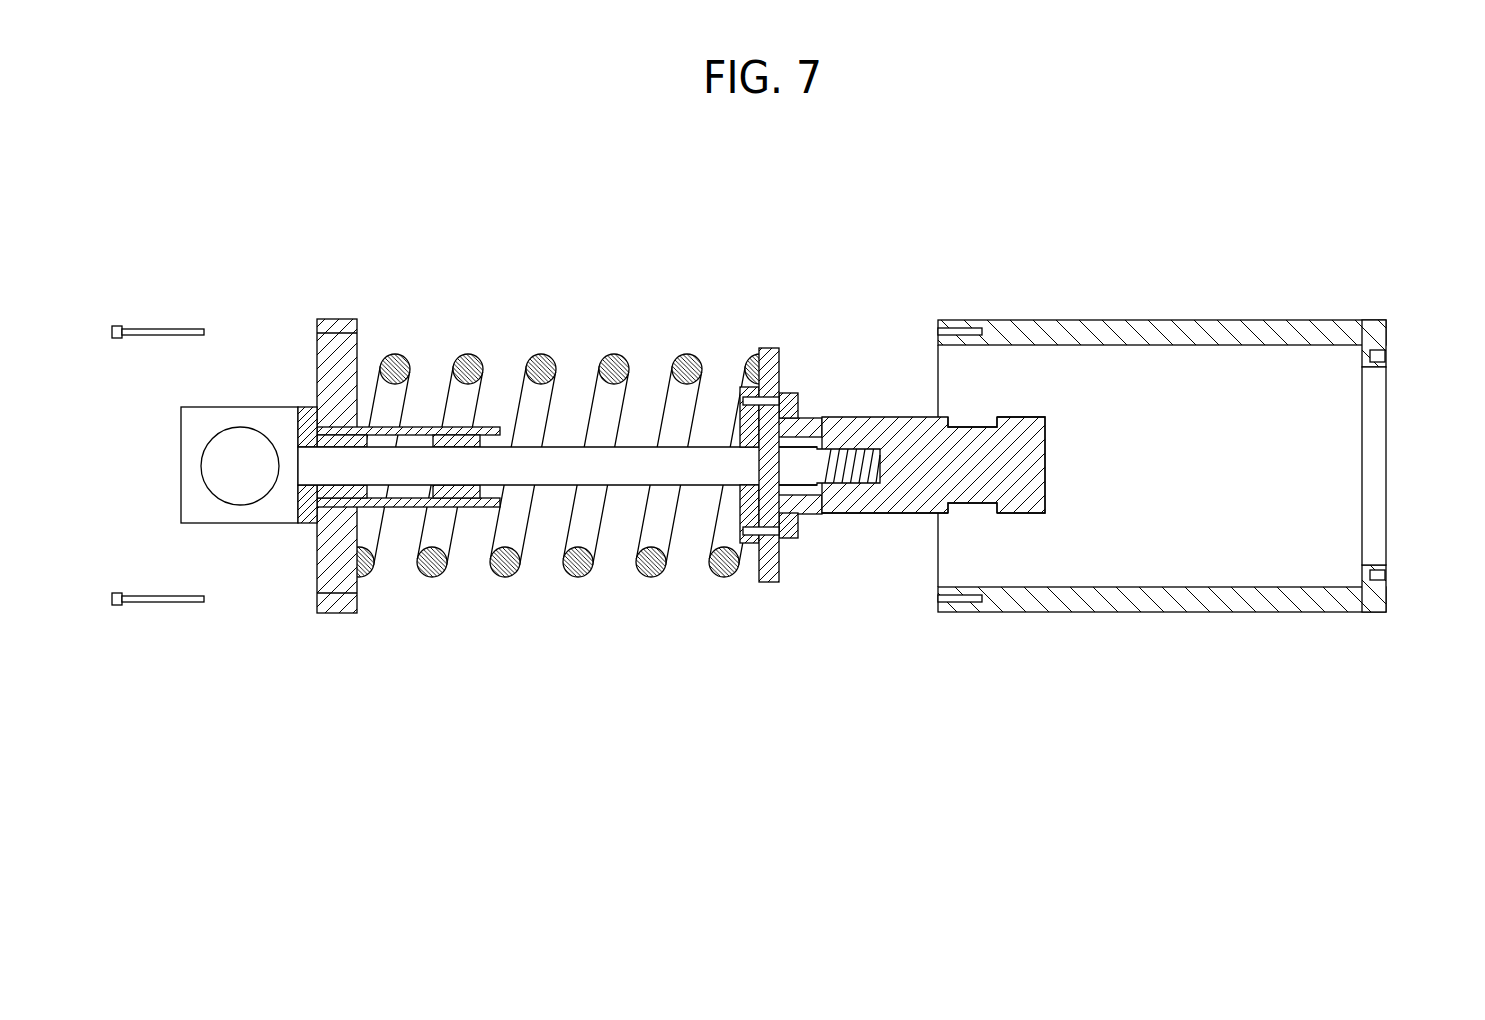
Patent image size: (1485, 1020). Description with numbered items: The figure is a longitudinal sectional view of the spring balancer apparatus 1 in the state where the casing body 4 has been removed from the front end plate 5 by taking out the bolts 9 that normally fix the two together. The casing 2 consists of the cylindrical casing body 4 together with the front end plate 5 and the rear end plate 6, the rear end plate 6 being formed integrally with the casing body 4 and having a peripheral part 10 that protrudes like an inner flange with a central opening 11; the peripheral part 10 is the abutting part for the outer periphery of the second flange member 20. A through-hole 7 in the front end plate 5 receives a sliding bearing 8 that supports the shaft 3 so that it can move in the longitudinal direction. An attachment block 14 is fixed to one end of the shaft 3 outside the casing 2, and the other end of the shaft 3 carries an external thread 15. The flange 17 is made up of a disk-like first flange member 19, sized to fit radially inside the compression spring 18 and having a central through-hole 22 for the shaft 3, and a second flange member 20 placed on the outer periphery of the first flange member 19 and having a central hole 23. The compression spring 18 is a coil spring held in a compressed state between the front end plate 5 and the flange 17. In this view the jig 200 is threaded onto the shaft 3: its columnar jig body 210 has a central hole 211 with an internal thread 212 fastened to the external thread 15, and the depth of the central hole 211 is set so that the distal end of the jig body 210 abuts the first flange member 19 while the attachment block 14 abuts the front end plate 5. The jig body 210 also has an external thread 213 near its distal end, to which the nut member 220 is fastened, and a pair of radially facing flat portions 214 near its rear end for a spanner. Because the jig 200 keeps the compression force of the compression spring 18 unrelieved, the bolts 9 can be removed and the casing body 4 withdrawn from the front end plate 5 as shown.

The spring balancer apparatus 1 is at (228, 210).
The casing 2 is at (1200, 410).
The shaft 3 is at (589, 533).
The casing body 4 is at (1200, 320).
The front end plate 5 is at (317, 366).
The rear end plate 6 is at (1392, 316).
The through-hole 7 is at (350, 500).
The sliding bearing 8 is at (314, 526).
The bolts 9 is at (118, 326).
The peripheral part 10 is at (1387, 338).
The opening 11 is at (1374, 552).
The attachment block 14 is at (182, 465).
The external thread 15 is at (842, 487).
The flange 17 is at (740, 436).
The compression spring 18 is at (430, 578).
The first flange member 19 is at (741, 514).
The second flange member 20 is at (760, 348).
The through-hole 22 is at (815, 467).
The central hole 23 is at (774, 497).
The jig 200 is at (930, 430).
The jig body 210 is at (1014, 408).
The central hole 211 is at (787, 440).
The internal thread 212 is at (872, 455).
The external thread 213 is at (865, 515).
The flat portions 214 is at (976, 505).
The nut member 220 is at (786, 393).